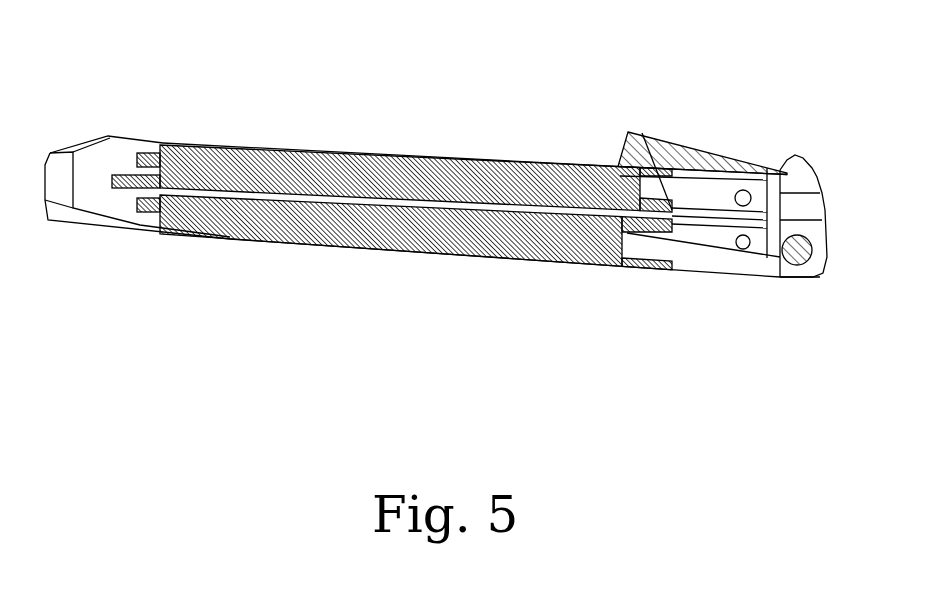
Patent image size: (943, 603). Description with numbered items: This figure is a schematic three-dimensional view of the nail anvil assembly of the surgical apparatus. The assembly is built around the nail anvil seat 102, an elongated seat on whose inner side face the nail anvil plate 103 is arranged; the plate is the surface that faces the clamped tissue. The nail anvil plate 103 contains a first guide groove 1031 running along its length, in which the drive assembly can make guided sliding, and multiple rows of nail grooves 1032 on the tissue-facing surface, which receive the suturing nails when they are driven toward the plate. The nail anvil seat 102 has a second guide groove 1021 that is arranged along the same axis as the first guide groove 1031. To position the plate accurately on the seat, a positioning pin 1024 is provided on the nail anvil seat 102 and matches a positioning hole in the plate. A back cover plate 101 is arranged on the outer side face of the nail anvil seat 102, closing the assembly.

The back cover plate 101 is at (700, 258).
The nail anvil seat 102 is at (62, 200).
The nail anvil plate 103 is at (128, 158).
The second guide groove 1021 is at (668, 200).
The positioning pin 1024 is at (746, 190).
The first guide groove 1031 is at (520, 258).
The nail grooves 1032 is at (392, 250).